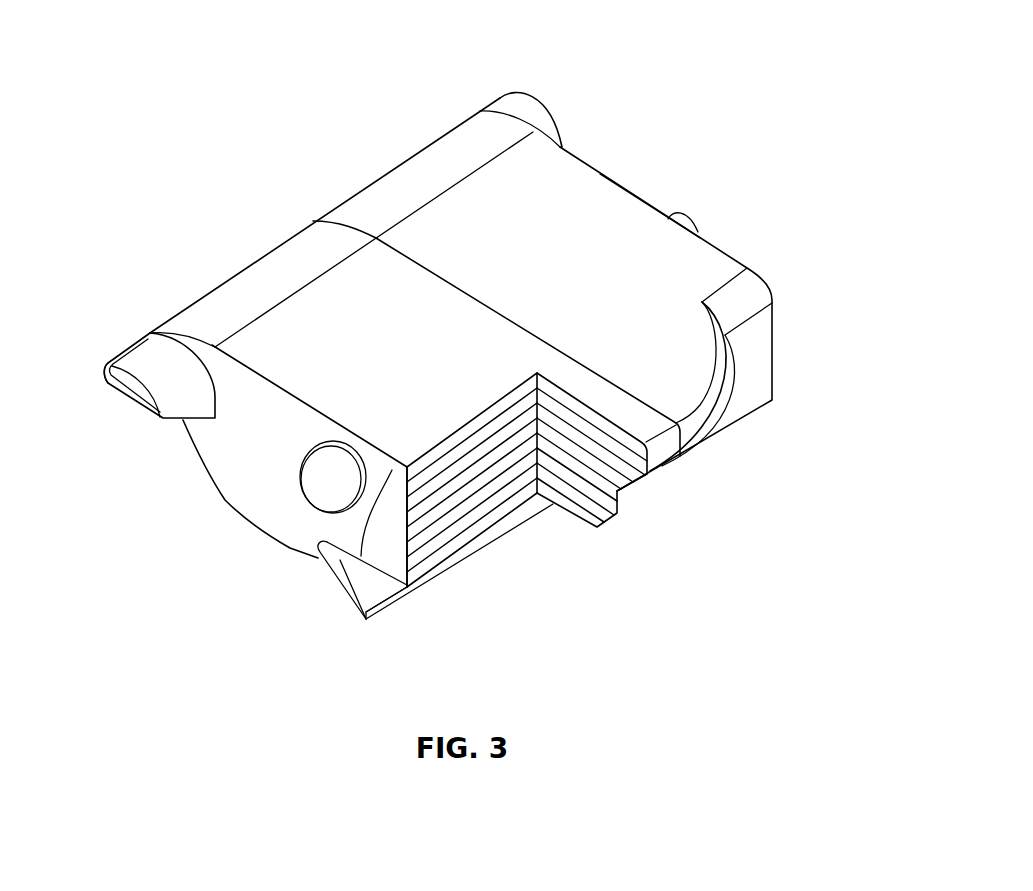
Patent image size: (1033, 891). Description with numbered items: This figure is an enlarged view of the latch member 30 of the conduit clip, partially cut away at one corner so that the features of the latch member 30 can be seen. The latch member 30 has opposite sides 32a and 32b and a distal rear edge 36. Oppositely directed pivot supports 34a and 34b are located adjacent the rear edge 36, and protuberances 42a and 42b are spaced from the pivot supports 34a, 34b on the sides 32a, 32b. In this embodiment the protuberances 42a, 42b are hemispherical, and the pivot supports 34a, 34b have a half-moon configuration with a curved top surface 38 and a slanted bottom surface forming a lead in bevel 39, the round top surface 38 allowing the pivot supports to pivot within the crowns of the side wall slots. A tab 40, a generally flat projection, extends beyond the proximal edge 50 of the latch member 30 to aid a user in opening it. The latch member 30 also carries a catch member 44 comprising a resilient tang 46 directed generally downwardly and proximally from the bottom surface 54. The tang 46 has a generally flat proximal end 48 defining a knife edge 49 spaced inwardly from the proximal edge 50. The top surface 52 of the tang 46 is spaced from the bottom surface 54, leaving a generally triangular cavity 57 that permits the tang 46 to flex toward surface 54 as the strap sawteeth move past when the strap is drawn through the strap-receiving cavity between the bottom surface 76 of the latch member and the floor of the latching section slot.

The latch member 30 is at (670, 101).
The side 32a is at (218, 455).
The side 32b is at (623, 187).
The pivot support 34a is at (145, 352).
The pivot support 34b is at (552, 110).
The distal rear edge 36 is at (272, 250).
The curved top surface 38 is at (165, 393).
The lead in bevel 39 is at (130, 402).
The tab 40 is at (688, 438).
The protuberance 42a is at (320, 485).
The protuberance 42b is at (697, 228).
The catch member 44 is at (408, 603).
The resilient tang 46 is at (353, 602).
The proximal end 48 is at (518, 518).
The knife edge 49 is at (503, 532).
The proximal edge 50 is at (745, 377).
The top surface 52 is at (368, 587).
The bottom surface 54 is at (392, 463).
The triangular cavity 57 is at (357, 563).
The bottom surface 76 is at (238, 507).